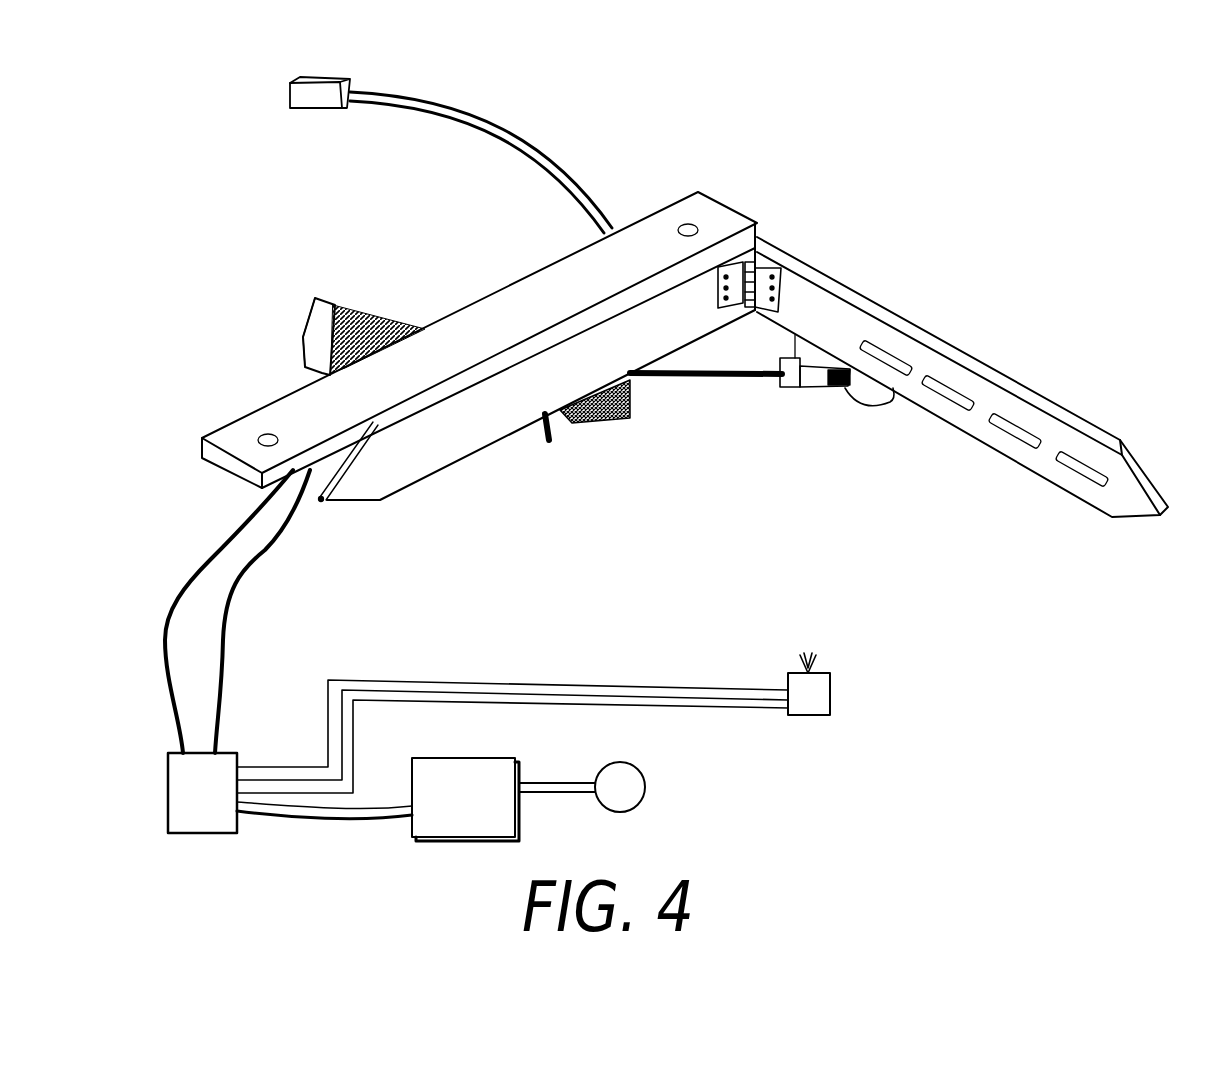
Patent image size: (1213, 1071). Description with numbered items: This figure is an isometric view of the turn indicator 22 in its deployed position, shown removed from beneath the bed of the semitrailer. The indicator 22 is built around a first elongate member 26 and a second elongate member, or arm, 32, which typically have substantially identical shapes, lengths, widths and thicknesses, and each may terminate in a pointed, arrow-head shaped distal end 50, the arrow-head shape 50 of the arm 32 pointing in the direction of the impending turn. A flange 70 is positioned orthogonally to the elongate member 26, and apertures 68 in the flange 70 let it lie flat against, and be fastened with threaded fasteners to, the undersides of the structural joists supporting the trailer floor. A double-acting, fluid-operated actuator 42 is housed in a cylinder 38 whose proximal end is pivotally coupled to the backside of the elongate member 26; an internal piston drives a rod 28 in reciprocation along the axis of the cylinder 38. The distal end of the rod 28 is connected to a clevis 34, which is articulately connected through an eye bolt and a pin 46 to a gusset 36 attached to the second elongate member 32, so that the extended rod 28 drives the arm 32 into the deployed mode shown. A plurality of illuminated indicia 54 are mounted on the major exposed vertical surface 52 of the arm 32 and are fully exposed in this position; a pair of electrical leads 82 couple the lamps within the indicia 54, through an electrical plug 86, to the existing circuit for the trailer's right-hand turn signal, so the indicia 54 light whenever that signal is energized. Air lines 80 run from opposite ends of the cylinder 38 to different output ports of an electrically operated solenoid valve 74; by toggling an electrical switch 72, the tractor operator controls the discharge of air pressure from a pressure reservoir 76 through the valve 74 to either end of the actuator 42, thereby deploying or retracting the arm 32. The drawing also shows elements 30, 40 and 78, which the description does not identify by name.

The indicator 22 is at (773, 192).
The elongate member 26 is at (427, 478).
The rod 28 is at (713, 383).
The hinge 30 is at (782, 262).
The second elongate member 32 is at (1027, 387).
The clevis 34 is at (797, 390).
The gusset 36 is at (880, 404).
The cylinder 38 is at (363, 314).
The top plate 40 is at (530, 411).
The actuator 42 is at (620, 430).
The pin 46 is at (820, 390).
The arrow-head shaped distal end 50 is at (320, 505).
The major exposed vertical surface 52 is at (1023, 453).
The indicia 54 is at (1081, 486).
The apertures 68 is at (260, 437).
The flange 70 is at (281, 399).
The electrical switch 72 is at (832, 704).
The solenoid valve 74 is at (213, 809).
The pressure reservoir 76 is at (479, 812).
The switch 78 is at (646, 801).
The air lines 80 is at (165, 677).
The electrical leads 82 is at (493, 124).
The electrical plug 86 is at (288, 93).